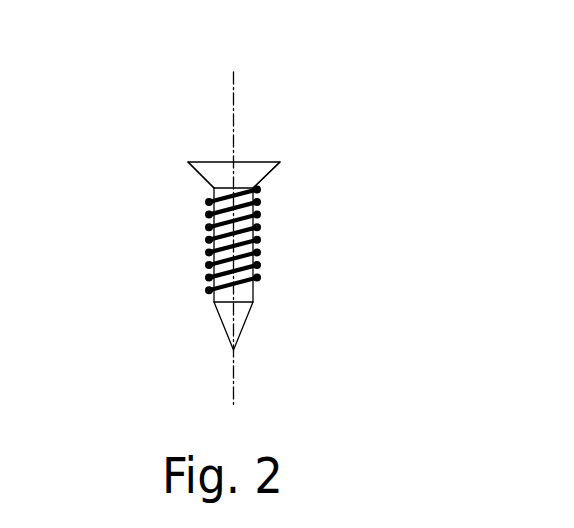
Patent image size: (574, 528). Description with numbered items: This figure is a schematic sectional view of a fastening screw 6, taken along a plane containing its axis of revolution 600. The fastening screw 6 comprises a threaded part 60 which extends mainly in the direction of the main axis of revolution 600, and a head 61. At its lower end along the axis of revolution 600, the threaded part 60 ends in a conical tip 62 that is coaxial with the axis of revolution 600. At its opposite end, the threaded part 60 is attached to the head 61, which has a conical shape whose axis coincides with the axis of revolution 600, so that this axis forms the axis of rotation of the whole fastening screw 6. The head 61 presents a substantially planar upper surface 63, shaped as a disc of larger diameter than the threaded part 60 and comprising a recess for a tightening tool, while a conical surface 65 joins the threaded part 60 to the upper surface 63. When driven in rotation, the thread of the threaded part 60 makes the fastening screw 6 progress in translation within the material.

The fastening screw 6 is at (190, 117).
The axis of revolution 600 is at (235, 108).
The upper surface 63 is at (259, 157).
The head 61 is at (273, 175).
The surface 65 is at (199, 176).
The threaded part 60 is at (258, 225).
The conical tip 62 is at (249, 319).